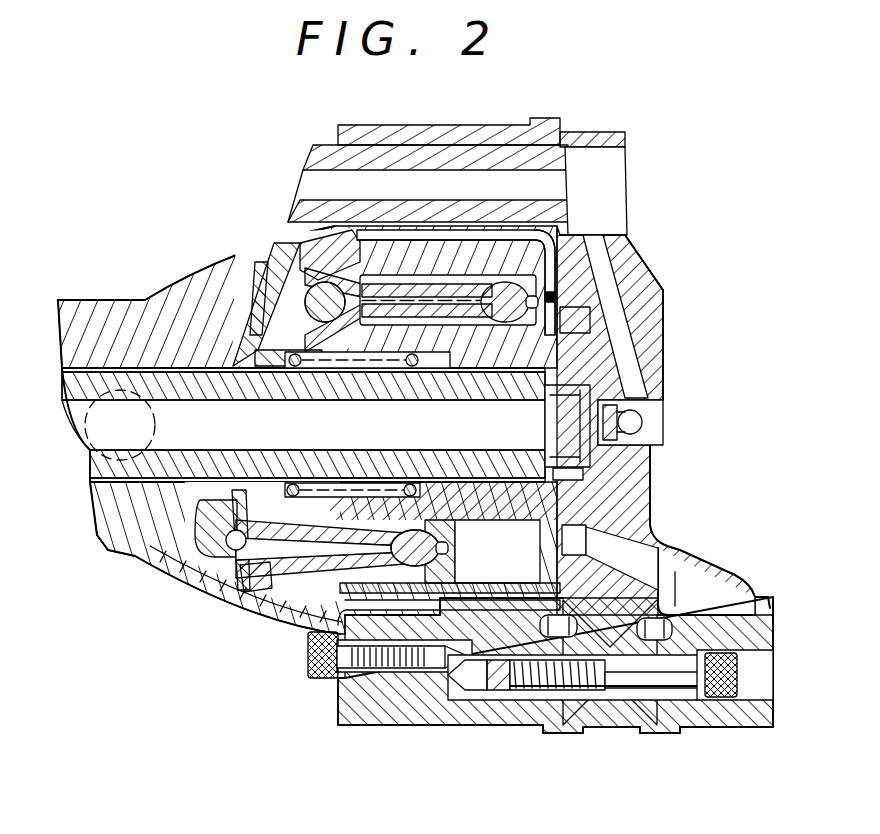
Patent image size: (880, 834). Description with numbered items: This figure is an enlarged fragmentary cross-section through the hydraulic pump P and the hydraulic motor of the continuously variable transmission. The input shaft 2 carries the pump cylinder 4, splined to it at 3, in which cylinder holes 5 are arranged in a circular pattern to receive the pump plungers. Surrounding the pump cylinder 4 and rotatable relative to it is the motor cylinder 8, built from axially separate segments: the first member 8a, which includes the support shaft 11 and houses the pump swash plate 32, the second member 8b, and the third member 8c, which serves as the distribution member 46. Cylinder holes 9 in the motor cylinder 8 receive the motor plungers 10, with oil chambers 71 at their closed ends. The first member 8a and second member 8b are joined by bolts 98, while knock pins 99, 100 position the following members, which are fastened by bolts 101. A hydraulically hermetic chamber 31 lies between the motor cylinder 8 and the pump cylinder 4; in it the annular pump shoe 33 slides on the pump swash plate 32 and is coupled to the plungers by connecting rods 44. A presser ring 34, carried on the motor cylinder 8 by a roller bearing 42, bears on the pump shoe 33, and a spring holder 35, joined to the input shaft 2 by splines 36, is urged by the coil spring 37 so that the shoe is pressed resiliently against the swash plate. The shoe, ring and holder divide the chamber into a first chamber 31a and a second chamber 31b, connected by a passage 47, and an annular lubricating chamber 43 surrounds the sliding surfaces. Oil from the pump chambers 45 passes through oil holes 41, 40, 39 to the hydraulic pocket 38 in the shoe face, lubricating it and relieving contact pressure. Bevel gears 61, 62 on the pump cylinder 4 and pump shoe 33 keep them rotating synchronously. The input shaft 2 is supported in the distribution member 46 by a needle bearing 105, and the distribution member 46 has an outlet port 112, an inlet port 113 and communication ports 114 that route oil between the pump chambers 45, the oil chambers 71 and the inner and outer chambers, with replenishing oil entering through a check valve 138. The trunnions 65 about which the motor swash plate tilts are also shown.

The input shaft 2 is at (90, 470).
The splines 3 is at (478, 446).
The pump cylinder 4 is at (455, 470).
The cylinder holes 5 is at (502, 600).
The motor cylinder 8 is at (388, 722).
The first member 8a is at (222, 255).
The second member 8b is at (392, 130).
The third member 8c is at (588, 730).
The cylinder holes 9 is at (440, 140).
The motor plungers 10 is at (314, 148).
The support shaft 11 is at (88, 302).
The hydraulically hermetic chamber 31 is at (262, 612).
The first chamber 31a is at (252, 318).
The second chamber 31b is at (372, 202).
The pump swash plate 32 is at (268, 268).
The pump shoe 33 is at (195, 530).
The presser ring 34 is at (240, 488).
The spring holder 35 is at (255, 352).
The splines 36 is at (300, 482).
The coil spring 37 is at (410, 435).
The hydraulic pocket 38 is at (202, 496).
The oil hole 39 is at (258, 576).
The oil hole 40 is at (420, 566).
The oil hole 41 is at (448, 548).
The roller bearing 42 is at (182, 590).
The lubricating chamber 43 is at (300, 240).
The connecting rods 44 is at (462, 320).
The pump chambers 45 is at (548, 576).
The distribution member 46 is at (655, 299).
The passage 47 is at (330, 372).
The bevel gear 61 is at (300, 616).
The bevel gear 62 is at (240, 600).
The trunnions 65 is at (85, 430).
The oil chambers 71 is at (593, 183).
The bolts 98 is at (418, 668).
The knock pin 99 is at (578, 604).
The knock pin 100 is at (640, 632).
The bolts 101 is at (608, 690).
The needle bearing 105 is at (560, 480).
The outlet port 112 is at (573, 306).
The inlet port 113 is at (582, 528).
The communication ports 114 is at (630, 275).
The check valve 138 is at (643, 422).
The hydraulic pump P is at (448, 605).